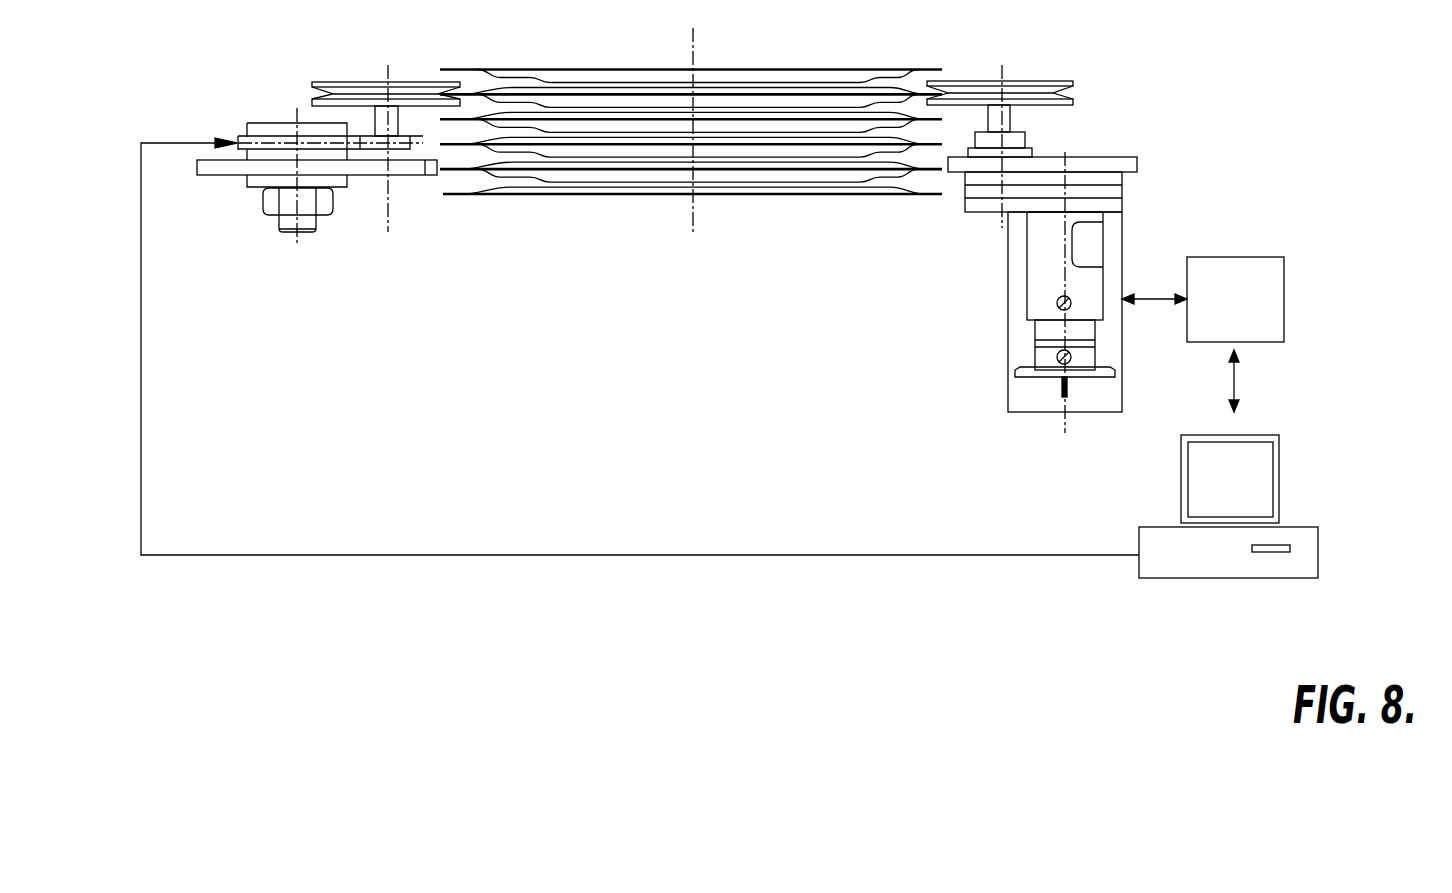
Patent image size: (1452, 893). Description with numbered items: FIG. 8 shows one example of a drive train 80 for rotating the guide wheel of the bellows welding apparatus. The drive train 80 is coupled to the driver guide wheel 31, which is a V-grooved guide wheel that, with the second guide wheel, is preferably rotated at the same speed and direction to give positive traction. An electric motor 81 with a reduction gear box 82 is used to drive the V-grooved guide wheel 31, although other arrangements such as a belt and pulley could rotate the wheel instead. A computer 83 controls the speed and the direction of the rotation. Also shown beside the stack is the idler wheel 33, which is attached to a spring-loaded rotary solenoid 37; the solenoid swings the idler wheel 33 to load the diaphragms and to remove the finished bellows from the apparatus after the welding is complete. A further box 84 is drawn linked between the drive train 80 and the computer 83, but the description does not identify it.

The driver guide wheel 31 is at (980, 83).
The idler wheel 33 is at (348, 82).
The spring-loaded rotary solenoid 37 is at (267, 128).
The drive train 80 is at (1022, 326).
The electric motor 81 is at (1030, 308).
The reduction gear box 82 is at (1103, 202).
The computer 83 is at (1195, 578).
The controller 84 is at (1255, 287).